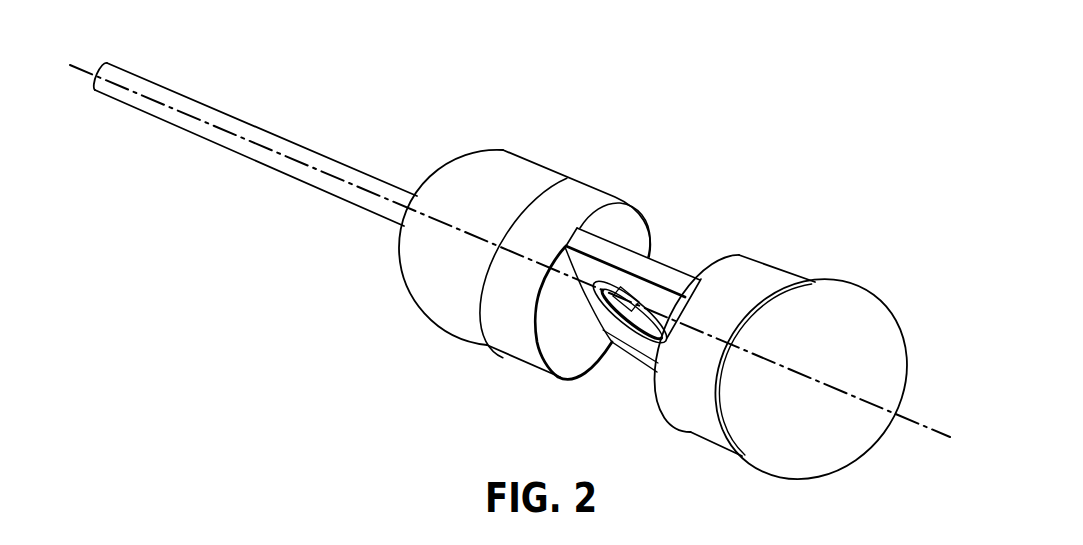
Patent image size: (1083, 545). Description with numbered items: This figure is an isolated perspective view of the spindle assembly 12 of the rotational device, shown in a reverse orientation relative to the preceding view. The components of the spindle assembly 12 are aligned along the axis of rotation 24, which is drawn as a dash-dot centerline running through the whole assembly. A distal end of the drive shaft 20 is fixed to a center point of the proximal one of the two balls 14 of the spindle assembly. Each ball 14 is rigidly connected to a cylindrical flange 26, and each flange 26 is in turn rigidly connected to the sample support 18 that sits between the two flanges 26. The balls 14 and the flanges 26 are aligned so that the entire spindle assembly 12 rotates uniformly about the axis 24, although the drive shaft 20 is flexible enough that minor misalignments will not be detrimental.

The spindle assembly 12 is at (665, 150).
The ball 14 is at (515, 162).
The sample support 18 is at (617, 343).
The drive shaft 20 is at (290, 148).
The axis of rotation 24 is at (935, 432).
The cylindrical flange 26 is at (733, 265).